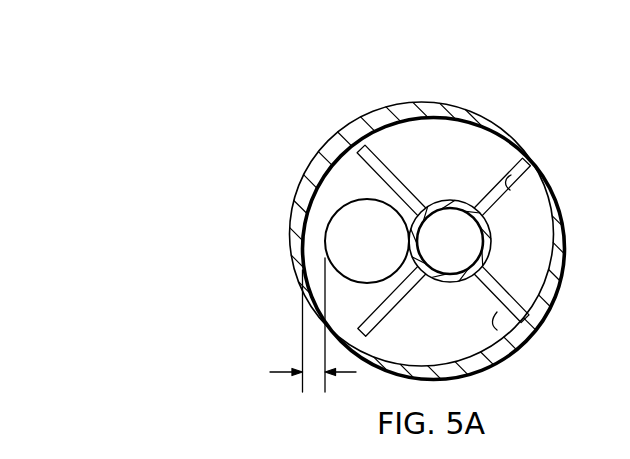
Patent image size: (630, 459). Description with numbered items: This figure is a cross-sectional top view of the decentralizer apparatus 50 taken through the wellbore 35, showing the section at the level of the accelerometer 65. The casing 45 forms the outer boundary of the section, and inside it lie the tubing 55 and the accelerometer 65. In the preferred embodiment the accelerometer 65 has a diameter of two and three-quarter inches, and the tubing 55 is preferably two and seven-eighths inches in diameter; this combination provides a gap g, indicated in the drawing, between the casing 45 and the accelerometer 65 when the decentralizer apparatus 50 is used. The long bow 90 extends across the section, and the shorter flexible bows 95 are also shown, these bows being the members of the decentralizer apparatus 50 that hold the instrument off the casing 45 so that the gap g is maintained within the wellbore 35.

The wellbore 35 is at (430, 317).
The casing 45 is at (328, 145).
The decentralizer apparatus 50 is at (457, 150).
The tubing 55 is at (493, 240).
The accelerometer 65 is at (325, 240).
The long bow 90 is at (361, 170).
The shorter flexible bows 95 is at (511, 175).
The gap g is at (313, 325).